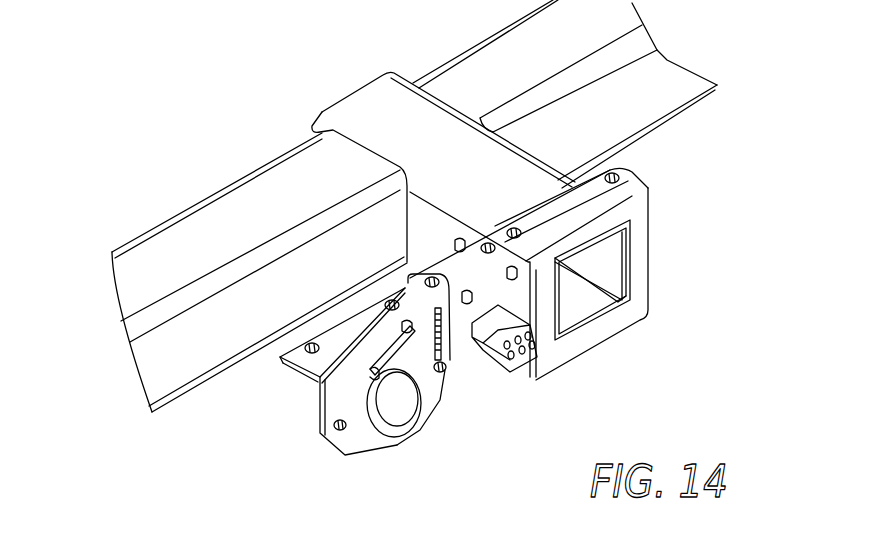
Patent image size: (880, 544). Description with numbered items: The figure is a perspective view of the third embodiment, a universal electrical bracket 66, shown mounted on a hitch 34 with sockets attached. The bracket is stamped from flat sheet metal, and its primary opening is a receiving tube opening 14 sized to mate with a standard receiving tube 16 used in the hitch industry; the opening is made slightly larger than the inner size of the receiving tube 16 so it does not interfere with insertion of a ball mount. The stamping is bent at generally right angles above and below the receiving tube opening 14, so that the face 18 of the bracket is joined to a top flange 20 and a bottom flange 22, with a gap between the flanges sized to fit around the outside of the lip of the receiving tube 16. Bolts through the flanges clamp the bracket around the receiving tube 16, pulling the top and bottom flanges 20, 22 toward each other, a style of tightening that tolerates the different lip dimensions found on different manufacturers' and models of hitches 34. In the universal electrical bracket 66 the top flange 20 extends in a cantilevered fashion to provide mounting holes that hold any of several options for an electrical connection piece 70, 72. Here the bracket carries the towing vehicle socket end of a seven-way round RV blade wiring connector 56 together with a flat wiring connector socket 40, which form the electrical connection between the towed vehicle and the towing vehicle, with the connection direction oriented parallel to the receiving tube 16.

The receiving tube opening 14 is at (607, 268).
The receiving tube 16 is at (395, 107).
The face of the bracket 18 is at (640, 280).
The top flange 20 is at (573, 212).
The bottom flange 22 is at (522, 362).
The hitch 34 is at (292, 208).
The socket 40 is at (507, 348).
The 7-way round RV blade wiring connector 56 is at (402, 402).
The universal electrical bracket 66 is at (197, 427).
The electrical connection piece 70 is at (443, 290).
The electrical connection piece 72 is at (320, 358).